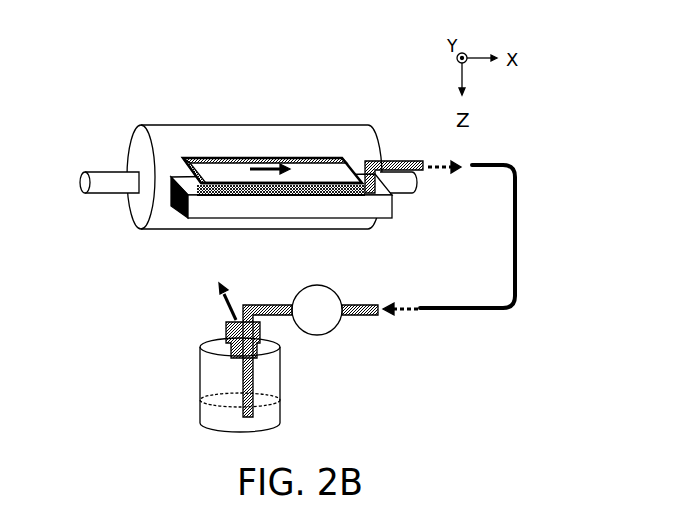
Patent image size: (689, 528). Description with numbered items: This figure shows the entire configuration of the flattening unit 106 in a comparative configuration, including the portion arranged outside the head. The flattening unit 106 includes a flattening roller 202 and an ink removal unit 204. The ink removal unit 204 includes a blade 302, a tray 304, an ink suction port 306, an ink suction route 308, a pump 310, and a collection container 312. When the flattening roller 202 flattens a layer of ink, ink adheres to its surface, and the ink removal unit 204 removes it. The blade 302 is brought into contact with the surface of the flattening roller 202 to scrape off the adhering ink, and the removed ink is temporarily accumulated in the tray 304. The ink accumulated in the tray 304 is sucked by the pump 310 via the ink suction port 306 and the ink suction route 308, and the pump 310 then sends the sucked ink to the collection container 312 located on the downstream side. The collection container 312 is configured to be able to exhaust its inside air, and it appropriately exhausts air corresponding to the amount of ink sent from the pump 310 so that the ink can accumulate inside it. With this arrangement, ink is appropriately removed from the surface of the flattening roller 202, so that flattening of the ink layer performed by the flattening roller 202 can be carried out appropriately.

The flattening unit 106 is at (103, 133).
The flattening roller 202 is at (195, 135).
The blade 302 is at (325, 167).
The tray 304 is at (302, 203).
The ink suction port 306 is at (243, 158).
The ink suction route 308 is at (407, 161).
The pump 310 is at (323, 335).
The collection container 312 is at (202, 415).
The ink removal unit 204 is at (168, 323).